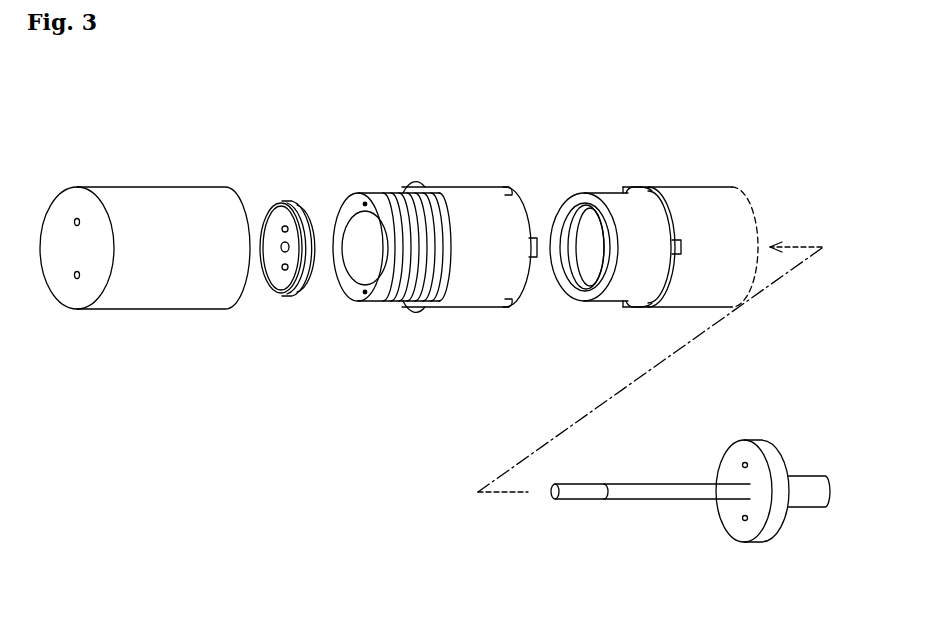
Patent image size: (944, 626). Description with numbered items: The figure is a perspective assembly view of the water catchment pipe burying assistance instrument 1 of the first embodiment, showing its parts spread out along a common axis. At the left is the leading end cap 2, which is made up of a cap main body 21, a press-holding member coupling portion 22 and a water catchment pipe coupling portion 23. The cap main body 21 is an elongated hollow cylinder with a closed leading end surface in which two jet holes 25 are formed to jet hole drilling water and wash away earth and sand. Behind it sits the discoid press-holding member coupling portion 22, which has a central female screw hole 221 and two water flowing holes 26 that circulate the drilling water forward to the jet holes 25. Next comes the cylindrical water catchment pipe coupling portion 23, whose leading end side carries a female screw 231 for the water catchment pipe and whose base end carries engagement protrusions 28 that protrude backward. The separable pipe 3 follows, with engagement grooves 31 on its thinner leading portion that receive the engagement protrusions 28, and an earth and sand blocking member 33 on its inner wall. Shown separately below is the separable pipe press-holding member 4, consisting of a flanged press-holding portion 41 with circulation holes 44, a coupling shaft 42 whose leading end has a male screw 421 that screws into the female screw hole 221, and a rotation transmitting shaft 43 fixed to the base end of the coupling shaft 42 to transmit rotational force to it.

The water catchment pipe burying assistance instrument 1 is at (72, 133).
The leading end cap 2 is at (505, 170).
The separable pipe 3 is at (695, 185).
The separable pipe press-holding member 4 is at (720, 417).
The cap main body 21 is at (145, 312).
The press-holding member coupling portion 22 is at (297, 296).
The water catchment pipe coupling portion 23 is at (435, 308).
The jet holes 25 is at (75, 225).
The water flowing holes 26 is at (283, 227).
The engagement protrusions 28 is at (512, 191).
The engagement grooves 31 is at (636, 189).
The earth and sand blocking member 33 is at (592, 210).
The press-holding portion 41 is at (752, 545).
The coupling shaft 42 is at (650, 500).
The rotation transmitting shaft 43 is at (794, 510).
The circulation holes 44 is at (741, 464).
The female screw hole 221 is at (282, 250).
The female screw 231 is at (370, 302).
The male screw 421 is at (569, 500).